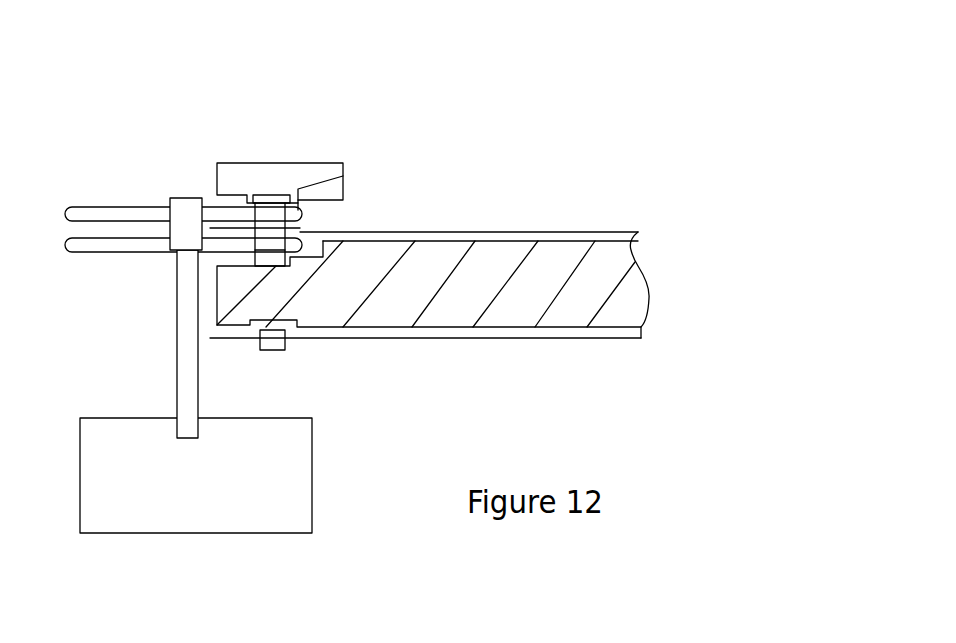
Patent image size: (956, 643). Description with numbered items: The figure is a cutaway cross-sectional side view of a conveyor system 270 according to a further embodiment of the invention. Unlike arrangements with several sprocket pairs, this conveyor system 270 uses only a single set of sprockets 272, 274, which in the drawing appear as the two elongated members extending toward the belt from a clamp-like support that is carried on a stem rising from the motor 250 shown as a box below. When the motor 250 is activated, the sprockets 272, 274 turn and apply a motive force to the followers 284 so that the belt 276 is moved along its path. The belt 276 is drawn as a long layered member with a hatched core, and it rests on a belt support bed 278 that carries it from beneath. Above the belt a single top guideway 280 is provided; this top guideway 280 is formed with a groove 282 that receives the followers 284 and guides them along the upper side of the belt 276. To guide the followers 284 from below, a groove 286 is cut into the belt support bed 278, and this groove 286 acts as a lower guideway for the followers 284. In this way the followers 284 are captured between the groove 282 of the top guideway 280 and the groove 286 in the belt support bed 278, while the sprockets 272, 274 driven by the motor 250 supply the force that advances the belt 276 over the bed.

The conveyor system 270 is at (155, 96).
The sprocket 272 is at (76, 208).
The sprocket 274 is at (84, 249).
The belt 276 is at (487, 231).
The belt support bed 278 is at (518, 298).
The top guideway 280 is at (292, 163).
The groove 282 is at (343, 176).
The followers 284 is at (297, 223).
The groove 286 is at (275, 267).
The motor 250 is at (293, 444).